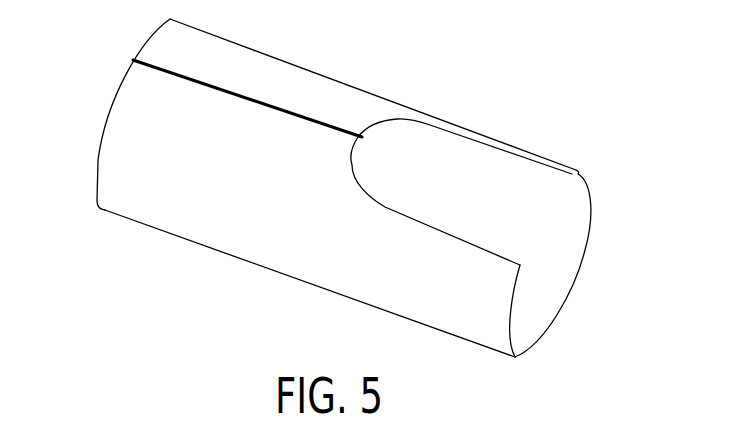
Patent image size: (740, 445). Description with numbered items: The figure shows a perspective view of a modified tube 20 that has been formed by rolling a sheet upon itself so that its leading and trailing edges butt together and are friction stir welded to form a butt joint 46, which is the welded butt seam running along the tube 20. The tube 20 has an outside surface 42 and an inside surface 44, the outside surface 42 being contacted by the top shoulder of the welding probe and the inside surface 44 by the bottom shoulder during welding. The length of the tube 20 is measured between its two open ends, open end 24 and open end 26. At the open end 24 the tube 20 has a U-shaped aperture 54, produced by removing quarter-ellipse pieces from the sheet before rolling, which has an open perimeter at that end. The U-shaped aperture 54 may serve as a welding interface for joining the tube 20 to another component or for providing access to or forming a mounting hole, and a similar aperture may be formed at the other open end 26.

The tube 20 is at (443, 59).
The open end 24 is at (535, 283).
The open end 26 is at (123, 116).
The outside surface 42 is at (215, 232).
The inside surface 44 is at (568, 248).
The butt joint 46 is at (249, 97).
The U-shaped aperture 54 is at (473, 171).